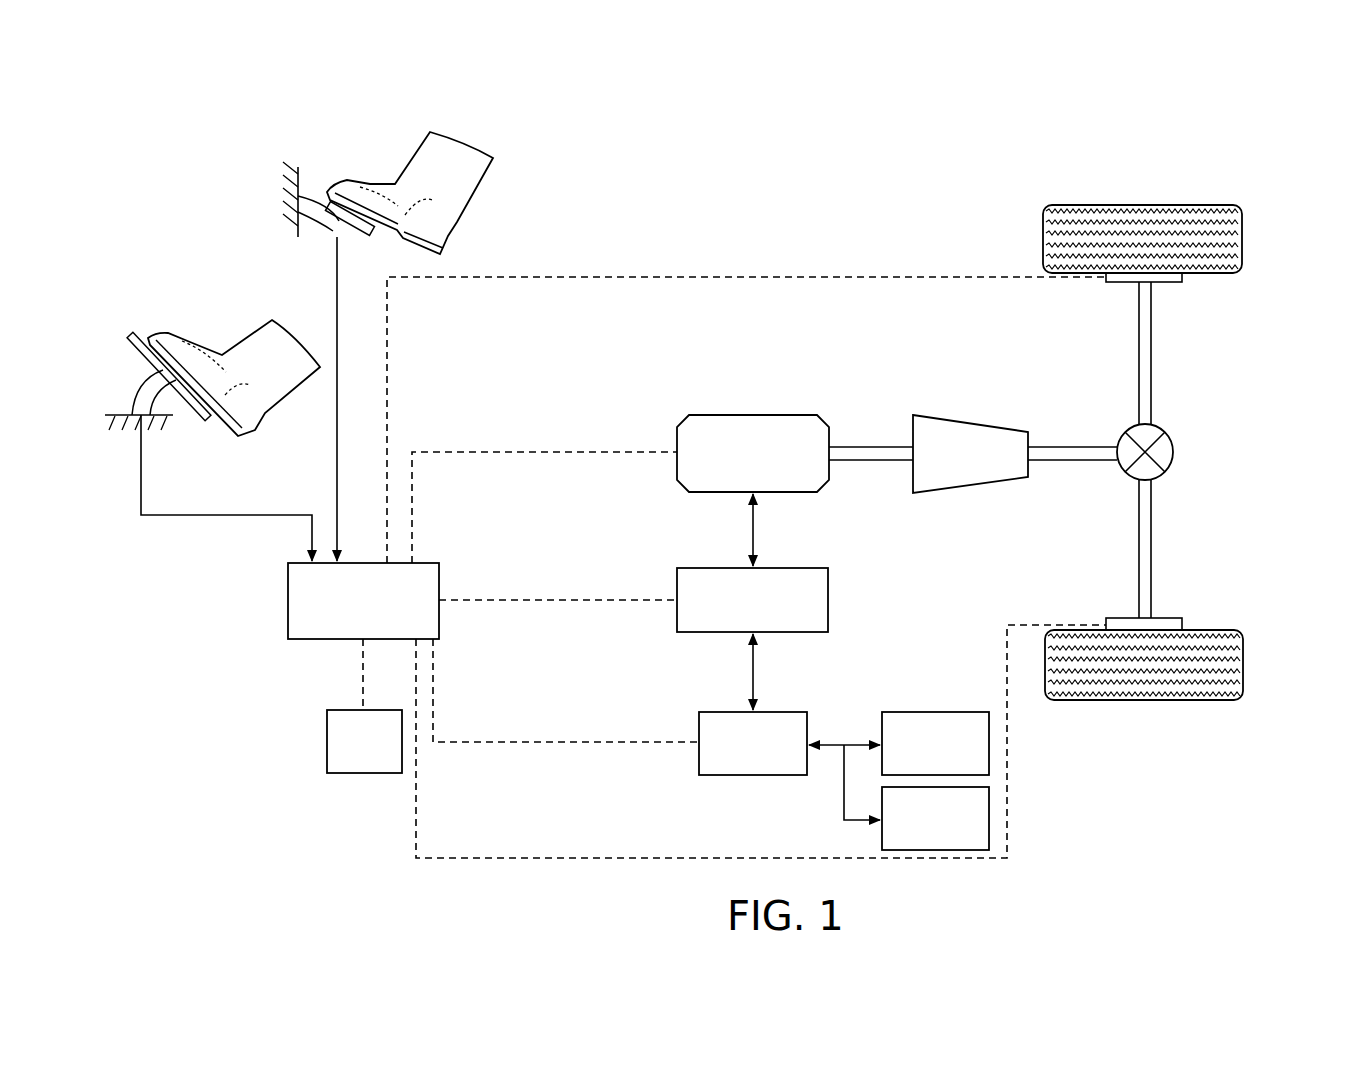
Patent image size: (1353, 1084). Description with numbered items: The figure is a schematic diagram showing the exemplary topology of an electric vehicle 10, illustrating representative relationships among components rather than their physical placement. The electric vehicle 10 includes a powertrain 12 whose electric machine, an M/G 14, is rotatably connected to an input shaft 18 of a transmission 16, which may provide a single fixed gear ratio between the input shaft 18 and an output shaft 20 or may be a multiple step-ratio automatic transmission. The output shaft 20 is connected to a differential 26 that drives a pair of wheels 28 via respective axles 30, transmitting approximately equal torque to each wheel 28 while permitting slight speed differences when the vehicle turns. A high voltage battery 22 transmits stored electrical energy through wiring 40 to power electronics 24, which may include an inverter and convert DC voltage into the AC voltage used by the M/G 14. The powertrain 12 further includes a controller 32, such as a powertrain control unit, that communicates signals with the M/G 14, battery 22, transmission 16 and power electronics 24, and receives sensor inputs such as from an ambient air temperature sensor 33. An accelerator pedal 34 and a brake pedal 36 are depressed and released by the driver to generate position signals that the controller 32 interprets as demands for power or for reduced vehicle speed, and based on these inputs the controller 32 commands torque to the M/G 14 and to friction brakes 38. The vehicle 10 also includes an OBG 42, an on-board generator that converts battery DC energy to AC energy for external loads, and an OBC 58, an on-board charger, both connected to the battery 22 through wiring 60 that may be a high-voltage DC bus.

The electric vehicle 10 is at (930, 163).
The powertrain 12 is at (864, 392).
The M/G 14 is at (677, 438).
The transmission 16 is at (963, 428).
The input shaft 18 is at (868, 447).
The output shaft 20 is at (1067, 447).
The battery 22 is at (699, 727).
The power electronics 24 is at (677, 582).
The differential 26 is at (1173, 452).
The wheels 28 is at (1242, 240).
The axles 30 is at (1151, 378).
The controller 32 is at (288, 597).
The ambient air temperature sensor 33 is at (327, 742).
The accelerator pedal 34 is at (215, 320).
The brake pedal 36 is at (385, 150).
The friction brakes 38 is at (1178, 282).
The wiring 40 is at (757, 677).
The OBG 42 is at (989, 740).
The OBC 58 is at (989, 818).
The wiring 60 is at (844, 795).